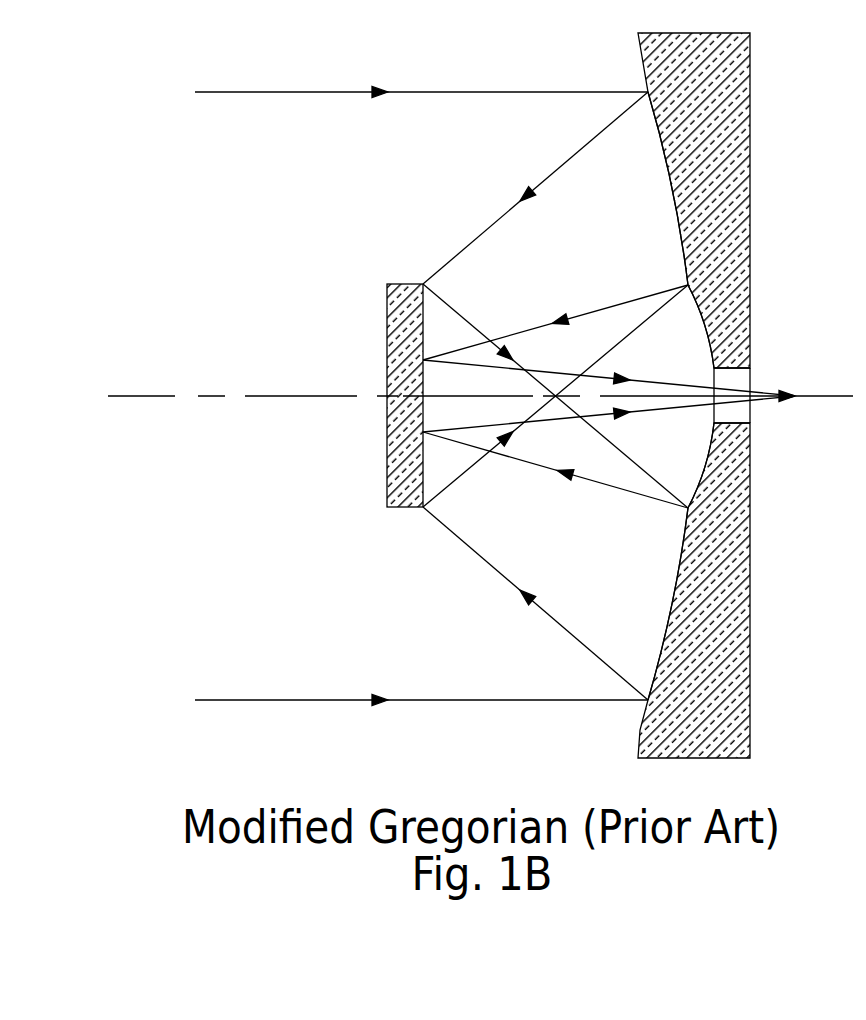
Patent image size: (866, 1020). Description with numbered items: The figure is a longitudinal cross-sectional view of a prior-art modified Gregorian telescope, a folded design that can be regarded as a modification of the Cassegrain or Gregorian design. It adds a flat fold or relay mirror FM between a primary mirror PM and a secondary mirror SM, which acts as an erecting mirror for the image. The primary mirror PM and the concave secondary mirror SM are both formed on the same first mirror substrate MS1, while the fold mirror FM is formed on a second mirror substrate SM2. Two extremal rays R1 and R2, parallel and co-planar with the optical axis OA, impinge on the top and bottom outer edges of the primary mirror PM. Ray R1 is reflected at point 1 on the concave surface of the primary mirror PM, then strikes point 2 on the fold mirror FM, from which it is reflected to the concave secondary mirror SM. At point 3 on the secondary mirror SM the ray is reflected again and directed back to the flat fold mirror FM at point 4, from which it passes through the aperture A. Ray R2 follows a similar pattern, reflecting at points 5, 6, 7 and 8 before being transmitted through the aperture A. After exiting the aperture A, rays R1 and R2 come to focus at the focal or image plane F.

The point 1 is at (535, 170).
The point 2 is at (555, 390).
The point 3 is at (555, 483).
The point 4 is at (609, 414).
The point 5 is at (535, 621).
The point 6 is at (555, 404).
The point 7 is at (555, 310).
The point 8 is at (609, 364).
The extremal ray R1 is at (304, 91).
The extremal ray R2 is at (304, 700).
The optical axis OA is at (158, 396).
The fold mirror FM is at (387, 311).
The second mirror substrate SM2 is at (387, 367).
The secondary mirror SM is at (708, 332).
The primary mirror PM is at (667, 170).
The mirror substrate MS1 is at (738, 130).
The focal or image plane F is at (792, 379).
The aperture A is at (742, 413).